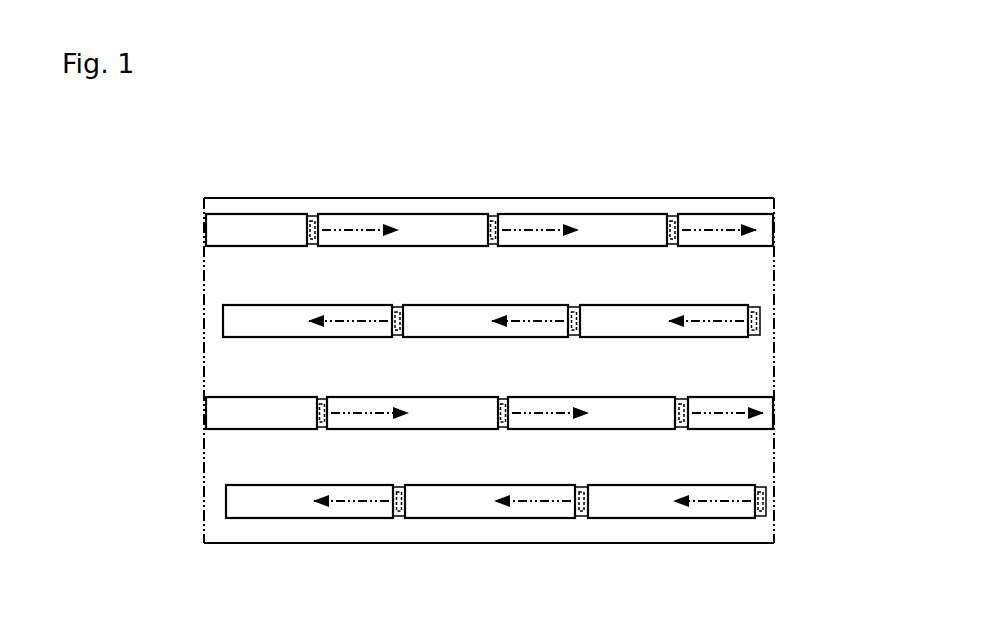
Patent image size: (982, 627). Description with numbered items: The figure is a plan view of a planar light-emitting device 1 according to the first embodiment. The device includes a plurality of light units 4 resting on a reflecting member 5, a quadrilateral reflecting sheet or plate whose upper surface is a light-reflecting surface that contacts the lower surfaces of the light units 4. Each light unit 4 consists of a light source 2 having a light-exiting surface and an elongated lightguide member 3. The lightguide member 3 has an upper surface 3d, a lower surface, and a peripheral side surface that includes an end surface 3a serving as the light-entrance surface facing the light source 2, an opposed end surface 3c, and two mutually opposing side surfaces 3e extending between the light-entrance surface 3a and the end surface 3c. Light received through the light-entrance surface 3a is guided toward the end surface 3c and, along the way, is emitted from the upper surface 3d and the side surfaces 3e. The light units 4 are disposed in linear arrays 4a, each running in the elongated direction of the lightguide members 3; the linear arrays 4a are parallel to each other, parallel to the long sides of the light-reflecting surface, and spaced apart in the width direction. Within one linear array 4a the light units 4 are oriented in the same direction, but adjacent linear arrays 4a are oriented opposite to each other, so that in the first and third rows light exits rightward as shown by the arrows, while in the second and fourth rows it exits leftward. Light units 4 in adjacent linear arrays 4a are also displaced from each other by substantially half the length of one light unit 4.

The planar light-emitting device 1 is at (802, 182).
The light source 2 is at (308, 222).
The lightguide member 3 is at (228, 213).
The end surface (light-entrance surface) 3a is at (313, 216).
The end surface opposed to the light-entrance surface 3c is at (492, 216).
The upper surface 3d is at (383, 222).
The side surfaces 3e is at (323, 518).
The light unit 4 is at (402, 210).
The linear array 4a is at (204, 230).
The reflecting member 5 is at (762, 356).